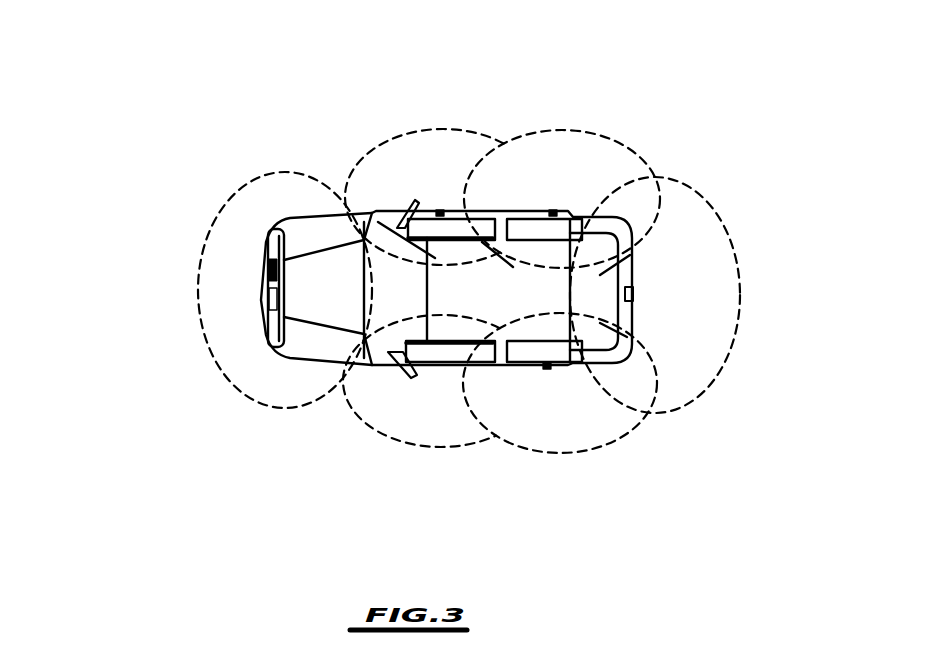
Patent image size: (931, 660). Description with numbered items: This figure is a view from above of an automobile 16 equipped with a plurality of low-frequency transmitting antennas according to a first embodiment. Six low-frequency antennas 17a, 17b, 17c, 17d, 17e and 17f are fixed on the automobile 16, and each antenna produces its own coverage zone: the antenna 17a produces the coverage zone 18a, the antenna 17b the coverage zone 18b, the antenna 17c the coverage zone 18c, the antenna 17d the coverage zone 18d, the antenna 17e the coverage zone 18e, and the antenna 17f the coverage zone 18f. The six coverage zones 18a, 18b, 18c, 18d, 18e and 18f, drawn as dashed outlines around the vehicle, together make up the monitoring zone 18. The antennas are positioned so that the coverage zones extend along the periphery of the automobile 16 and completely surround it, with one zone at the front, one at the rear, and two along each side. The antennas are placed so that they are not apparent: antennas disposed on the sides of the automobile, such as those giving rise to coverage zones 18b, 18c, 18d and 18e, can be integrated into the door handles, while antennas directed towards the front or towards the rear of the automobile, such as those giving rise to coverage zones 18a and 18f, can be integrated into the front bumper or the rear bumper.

The automobile 16 is at (633, 260).
The low-frequency antenna 17a is at (262, 282).
The low-frequency antenna 17b is at (427, 378).
The low-frequency antenna 17c is at (547, 367).
The low-frequency antenna 17d is at (552, 215).
The low-frequency antenna 17e is at (440, 212).
The low-frequency antenna 17f is at (633, 291).
The monitoring zone 18 is at (208, 366).
The coverage zone 18a is at (214, 289).
The coverage zone 18b is at (467, 444).
The coverage zone 18c is at (627, 426).
The coverage zone 18d is at (607, 165).
The coverage zone 18e is at (448, 147).
The coverage zone 18f is at (700, 370).